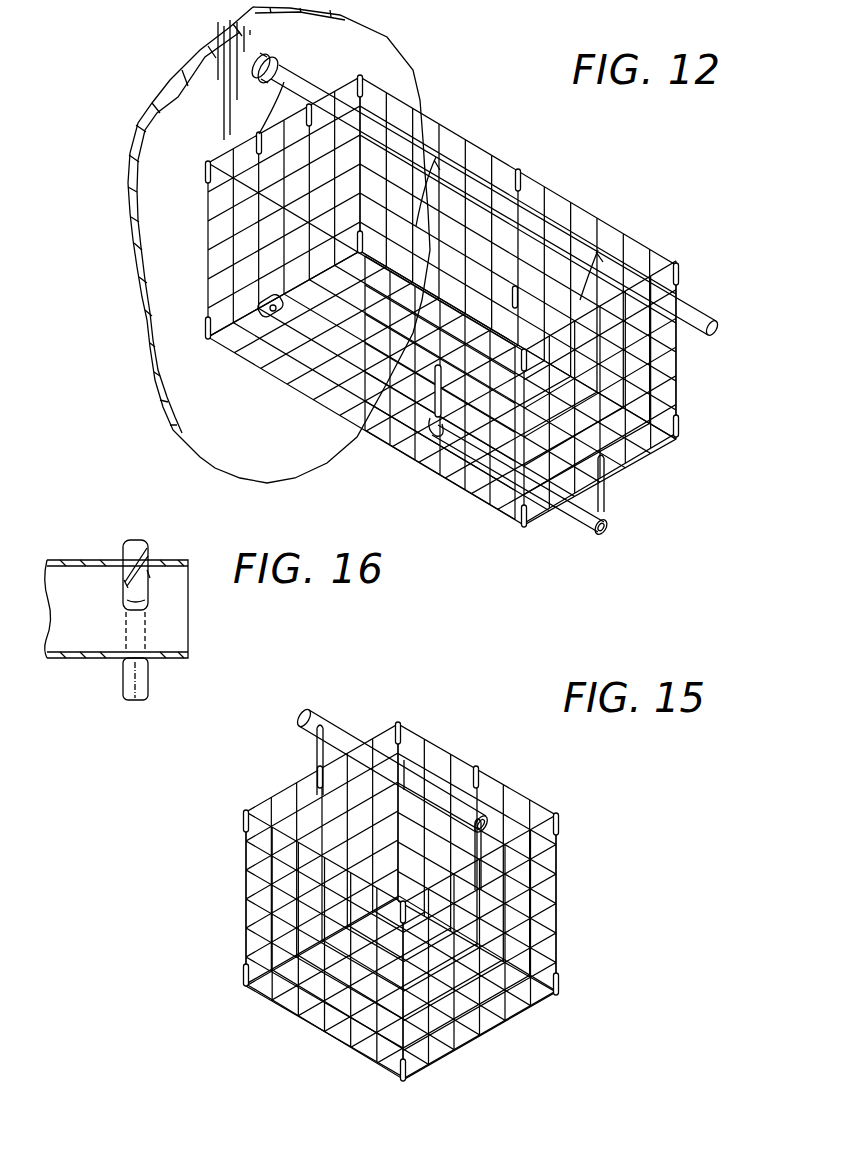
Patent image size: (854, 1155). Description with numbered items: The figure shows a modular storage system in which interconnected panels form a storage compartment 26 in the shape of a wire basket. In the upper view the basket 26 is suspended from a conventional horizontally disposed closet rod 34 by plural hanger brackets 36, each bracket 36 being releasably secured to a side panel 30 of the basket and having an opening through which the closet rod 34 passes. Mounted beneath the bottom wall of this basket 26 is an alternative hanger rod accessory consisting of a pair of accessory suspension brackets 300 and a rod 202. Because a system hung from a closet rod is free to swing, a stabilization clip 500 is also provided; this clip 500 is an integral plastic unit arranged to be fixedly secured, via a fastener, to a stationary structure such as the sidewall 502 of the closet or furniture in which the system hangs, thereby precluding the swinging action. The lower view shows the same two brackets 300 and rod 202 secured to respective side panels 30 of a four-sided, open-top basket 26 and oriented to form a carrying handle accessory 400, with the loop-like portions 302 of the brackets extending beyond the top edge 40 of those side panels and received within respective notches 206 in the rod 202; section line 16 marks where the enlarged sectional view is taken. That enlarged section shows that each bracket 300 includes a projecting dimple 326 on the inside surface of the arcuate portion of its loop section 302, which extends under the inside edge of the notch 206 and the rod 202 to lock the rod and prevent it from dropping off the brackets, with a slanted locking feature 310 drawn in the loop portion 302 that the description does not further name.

In FIG. 15, the wire mesh side panel 16 is at (472, 777).
In FIG. 12, the storage compartment 26 is at (456, 122).
In FIG. 15, the side panel 30 is at (246, 888).
In FIG. 12, the closet rod 34 is at (693, 316).
In FIG. 12, the hanger bracket 36 is at (287, 72).
In FIG. 15, the top edge 40 is at (250, 808).
In FIG. 12, the rod 202 is at (574, 511).
In FIG. 16, the rod 202 is at (98, 660).
In FIG. 15, the rod 202 is at (354, 748).
In FIG. 16, the notch 206 is at (128, 598).
In FIG. 15, the notch 206 is at (334, 696).
In FIG. 12, the accessory suspension bracket 300 is at (426, 435).
In FIG. 15, the accessory suspension bracket 300 is at (314, 752).
In FIG. 16, the loop-like portion 302 is at (121, 548).
In FIG. 16, the slot 310 is at (137, 556).
In FIG. 16, the projecting dimple 326 is at (150, 574).
In FIG. 15, the carrying handle accessory 400 is at (408, 770).
In FIG. 12, the stabilization clip 500 is at (264, 335).
In FIG. 12, the sidewall 502 is at (294, 462).